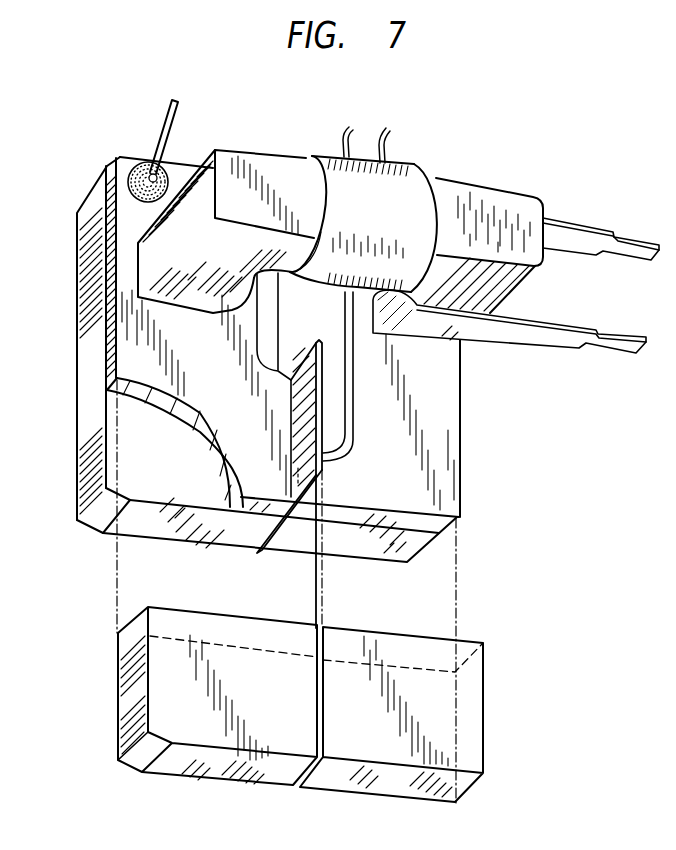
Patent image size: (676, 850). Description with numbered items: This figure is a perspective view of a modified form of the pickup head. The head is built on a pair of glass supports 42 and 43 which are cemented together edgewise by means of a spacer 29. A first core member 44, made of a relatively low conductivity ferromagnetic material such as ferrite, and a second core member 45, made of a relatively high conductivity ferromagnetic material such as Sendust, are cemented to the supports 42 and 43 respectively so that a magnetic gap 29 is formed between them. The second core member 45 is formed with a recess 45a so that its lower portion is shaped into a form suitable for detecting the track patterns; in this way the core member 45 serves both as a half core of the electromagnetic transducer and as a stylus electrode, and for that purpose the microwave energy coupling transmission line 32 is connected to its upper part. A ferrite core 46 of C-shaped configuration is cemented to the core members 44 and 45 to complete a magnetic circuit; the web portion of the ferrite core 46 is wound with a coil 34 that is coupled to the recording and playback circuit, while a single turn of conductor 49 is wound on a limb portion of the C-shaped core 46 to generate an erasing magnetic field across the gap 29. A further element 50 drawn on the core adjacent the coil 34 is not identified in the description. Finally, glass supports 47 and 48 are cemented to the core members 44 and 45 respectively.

The spacer 29 is at (273, 541).
The microwave energy coupling transmission line 32 is at (168, 112).
The coil 34 is at (386, 130).
The glass support 42 is at (411, 547).
The glass support 43 is at (77, 500).
The first core member 44 is at (450, 407).
The second core member 45 is at (130, 358).
The recess 45a is at (201, 430).
The ferrite core 46 is at (538, 270).
The glass support 47 is at (476, 748).
The glass support 48 is at (188, 764).
The single turn of conductor 49 is at (568, 222).
The coil 50 is at (430, 172).